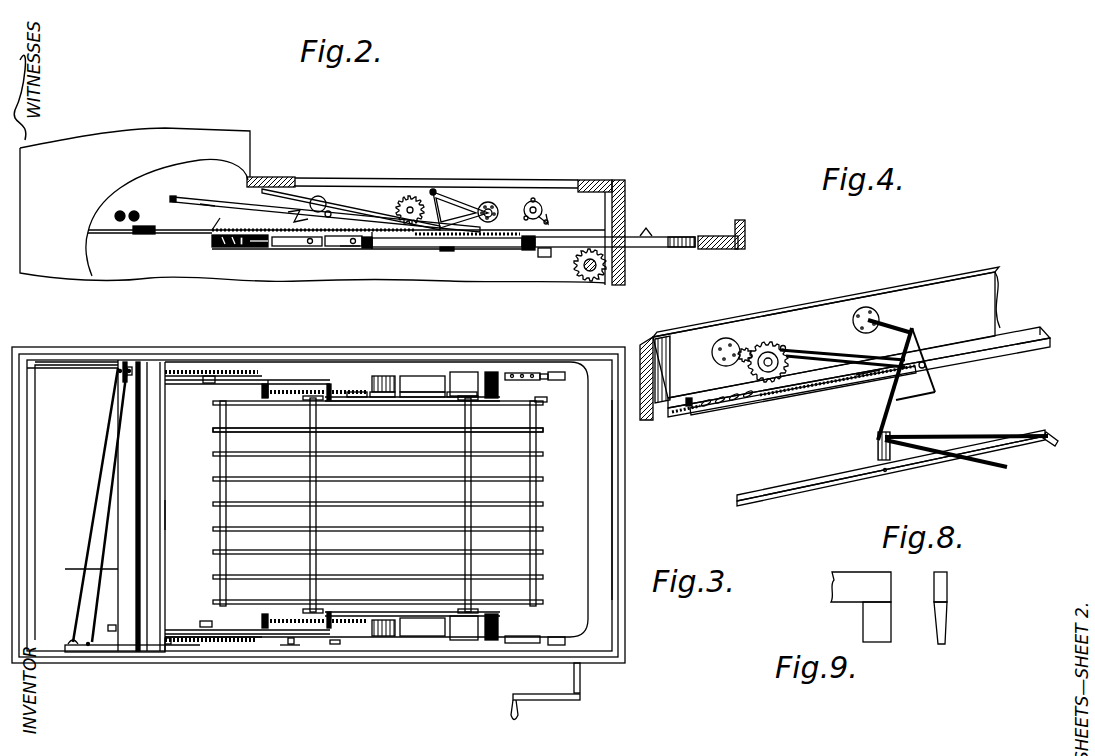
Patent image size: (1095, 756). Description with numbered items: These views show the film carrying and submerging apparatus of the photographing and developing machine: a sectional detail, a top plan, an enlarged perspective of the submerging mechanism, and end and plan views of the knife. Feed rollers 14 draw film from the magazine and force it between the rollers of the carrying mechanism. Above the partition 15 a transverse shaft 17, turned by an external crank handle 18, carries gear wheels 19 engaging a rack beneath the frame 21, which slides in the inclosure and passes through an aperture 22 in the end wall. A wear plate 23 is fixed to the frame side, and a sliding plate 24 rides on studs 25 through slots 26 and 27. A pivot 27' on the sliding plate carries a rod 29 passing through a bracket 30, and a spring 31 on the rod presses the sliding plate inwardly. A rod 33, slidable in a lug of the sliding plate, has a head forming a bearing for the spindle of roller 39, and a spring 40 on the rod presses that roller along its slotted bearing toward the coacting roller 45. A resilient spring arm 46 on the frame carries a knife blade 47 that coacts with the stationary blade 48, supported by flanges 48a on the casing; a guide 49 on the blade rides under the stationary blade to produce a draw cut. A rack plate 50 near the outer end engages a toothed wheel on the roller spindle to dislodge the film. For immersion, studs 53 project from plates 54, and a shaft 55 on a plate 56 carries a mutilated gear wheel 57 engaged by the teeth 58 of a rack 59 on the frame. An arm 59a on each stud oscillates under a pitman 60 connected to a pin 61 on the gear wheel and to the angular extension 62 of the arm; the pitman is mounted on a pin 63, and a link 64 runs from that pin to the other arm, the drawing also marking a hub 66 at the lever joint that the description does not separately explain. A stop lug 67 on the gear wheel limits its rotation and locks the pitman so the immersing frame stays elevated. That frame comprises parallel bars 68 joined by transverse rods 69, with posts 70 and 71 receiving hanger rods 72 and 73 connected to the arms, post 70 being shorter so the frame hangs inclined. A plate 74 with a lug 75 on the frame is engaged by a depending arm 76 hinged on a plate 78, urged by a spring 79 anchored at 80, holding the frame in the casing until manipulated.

In FIG. 2, the feed rollers 14 is at (121, 210).
In FIG. 2, the partition 15 is at (655, 235).
In FIG. 3, the shaft 17 is at (580, 677).
In FIG. 3, the crank handle 18 is at (516, 700).
In FIG. 2, the gear wheels 19 is at (545, 257).
In FIG. 2, the frame 21 is at (712, 250).
In FIG. 3, the frame 21 is at (598, 470).
In FIG. 2, the aperture 22 is at (626, 225).
In FIG. 3, the wear plate 23 is at (250, 370).
In FIG. 3, the sliding plate 24 is at (233, 368).
In FIG. 2, the studs 25 is at (340, 247).
In FIG. 3, the studs 25 is at (205, 374).
In FIG. 2, the slot 26 is at (292, 247).
In FIG. 2, the slot 27 is at (362, 255).
In FIG. 2, the pivot 27' is at (313, 209).
In FIG. 3, the pivot 27' is at (252, 402).
In FIG. 3, the rod 29 is at (382, 398).
In FIG. 2, the bracket 30 is at (527, 251).
In FIG. 3, the bracket 30 is at (292, 388).
In FIG. 2, the spring 31 is at (388, 247).
In FIG. 2, the rod 33 is at (252, 177).
In FIG. 2, the roller 39 is at (240, 248).
In FIG. 2, the spring 40 is at (258, 248).
In FIG. 2, the roller 45 is at (220, 248).
In FIG. 3, the roller 45 is at (80, 558).
In FIG. 2, the spring arm 46 is at (212, 240).
In FIG. 2, the knife blade 47 is at (176, 199).
In FIG. 3, the knife blade 47 is at (98, 466).
In FIG. 8, the knife blade 47 is at (947, 588).
In FIG. 9, the knife blade 47 is at (843, 578).
In FIG. 2, the stationary blade 48 is at (142, 236).
In FIG. 3, the stationary blade 48 is at (139, 428).
In FIG. 3, the flanges 48a is at (80, 360).
In FIG. 3, the guide 49 is at (122, 371).
In FIG. 8, the guide 49 is at (946, 617).
In FIG. 9, the guide 49 is at (870, 615).
In FIG. 2, the rack plate 50 is at (576, 270).
In FIG. 2, the stud 53 is at (540, 204).
In FIG. 3, the stud 53 is at (380, 374).
In FIG. 4, the stud 53 is at (900, 322).
In FIG. 2, the plate 54 is at (324, 201).
In FIG. 3, the plate 54 is at (340, 372).
In FIG. 4, the plate 54 is at (864, 306).
In FIG. 4, the shaft 55 is at (747, 348).
In FIG. 4, the plate 56 is at (722, 338).
In FIG. 2, the mutilated gear wheel 57 is at (416, 200).
In FIG. 3, the mutilated gear wheel 57 is at (465, 372).
In FIG. 4, the mutilated gear wheel 57 is at (772, 344).
In FIG. 2, the teeth 58 is at (450, 250).
In FIG. 3, the teeth 58 is at (458, 398).
In FIG. 4, the teeth 58 is at (732, 404).
In FIG. 2, the rack 59 is at (420, 248).
In FIG. 3, the rack 59 is at (412, 402).
In FIG. 4, the rack 59 is at (690, 396).
In FIG. 2, the arm 59a is at (326, 210).
In FIG. 3, the arm 59a is at (356, 398).
In FIG. 4, the arm 59a is at (872, 378).
In FIG. 3, the pitman 60 is at (430, 376).
In FIG. 4, the pitman 60 is at (825, 356).
In FIG. 4, the pin 61 is at (786, 348).
In FIG. 2, the angular extension 62 is at (302, 214).
In FIG. 4, the angular extension 62 is at (930, 393).
In FIG. 4, the pin 63 is at (926, 360).
In FIG. 2, the link 64 is at (374, 236).
In FIG. 3, the link 64 is at (412, 398).
In FIG. 4, the link 64 is at (812, 398).
In FIG. 2, the hub 66 is at (490, 208).
In FIG. 3, the hub 66 is at (500, 408).
In FIG. 4, the stop lug 67 is at (787, 348).
In FIG. 2, the parallel bars 68 is at (240, 204).
In FIG. 3, the parallel bars 68 is at (520, 455).
In FIG. 4, the parallel bars 68 is at (830, 482).
In FIG. 2, the rod 69 is at (193, 213).
In FIG. 3, the rod 69 is at (213, 466).
In FIG. 4, the rod 69 is at (1058, 440).
In FIG. 2, the post 70 is at (285, 177).
In FIG. 3, the post 70 is at (300, 405).
In FIG. 2, the post 71 is at (456, 205).
In FIG. 3, the post 71 is at (492, 400).
In FIG. 4, the post 71 is at (905, 438).
In FIG. 3, the hanger rod 72 is at (316, 466).
In FIG. 2, the hanger rod 73 is at (436, 190).
In FIG. 4, the hanger rod 73 is at (988, 444).
In FIG. 2, the plate 74 is at (650, 248).
In FIG. 3, the plate 74 is at (515, 372).
In FIG. 3, the lug 75 is at (540, 372).
In FIG. 2, the depending arm 76 is at (546, 212).
In FIG. 3, the depending arm 76 is at (465, 468).
In FIG. 2, the plate 78 is at (594, 180).
In FIG. 3, the plate 78 is at (562, 372).
In FIG. 2, the spring 79 is at (525, 219).
In FIG. 2, the anchor 80 is at (548, 222).